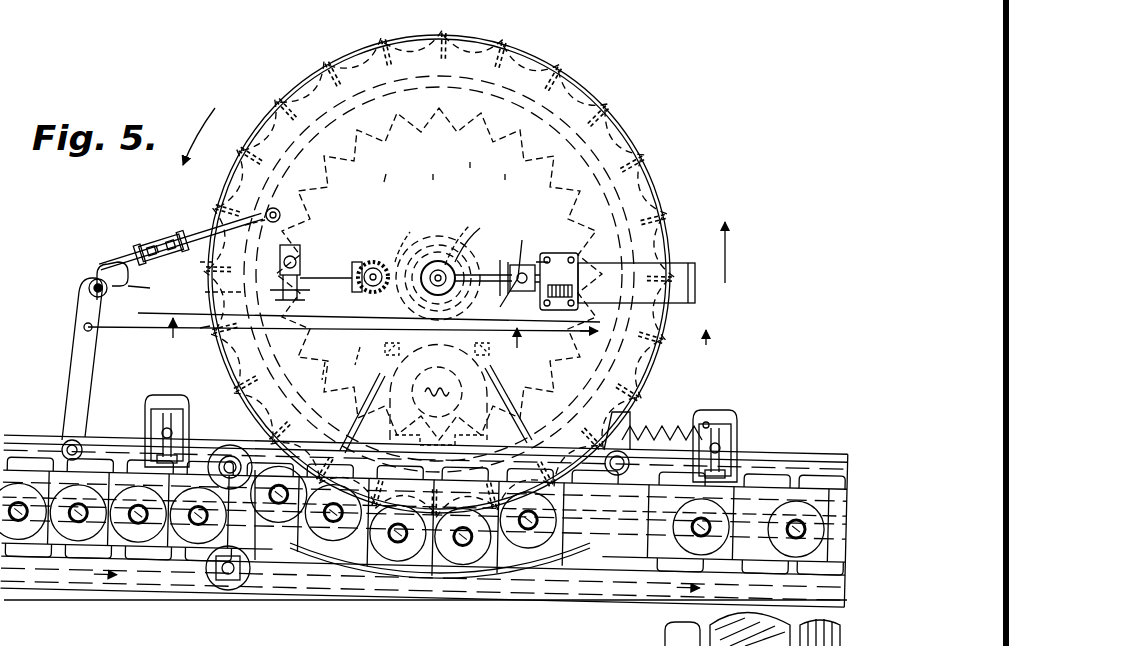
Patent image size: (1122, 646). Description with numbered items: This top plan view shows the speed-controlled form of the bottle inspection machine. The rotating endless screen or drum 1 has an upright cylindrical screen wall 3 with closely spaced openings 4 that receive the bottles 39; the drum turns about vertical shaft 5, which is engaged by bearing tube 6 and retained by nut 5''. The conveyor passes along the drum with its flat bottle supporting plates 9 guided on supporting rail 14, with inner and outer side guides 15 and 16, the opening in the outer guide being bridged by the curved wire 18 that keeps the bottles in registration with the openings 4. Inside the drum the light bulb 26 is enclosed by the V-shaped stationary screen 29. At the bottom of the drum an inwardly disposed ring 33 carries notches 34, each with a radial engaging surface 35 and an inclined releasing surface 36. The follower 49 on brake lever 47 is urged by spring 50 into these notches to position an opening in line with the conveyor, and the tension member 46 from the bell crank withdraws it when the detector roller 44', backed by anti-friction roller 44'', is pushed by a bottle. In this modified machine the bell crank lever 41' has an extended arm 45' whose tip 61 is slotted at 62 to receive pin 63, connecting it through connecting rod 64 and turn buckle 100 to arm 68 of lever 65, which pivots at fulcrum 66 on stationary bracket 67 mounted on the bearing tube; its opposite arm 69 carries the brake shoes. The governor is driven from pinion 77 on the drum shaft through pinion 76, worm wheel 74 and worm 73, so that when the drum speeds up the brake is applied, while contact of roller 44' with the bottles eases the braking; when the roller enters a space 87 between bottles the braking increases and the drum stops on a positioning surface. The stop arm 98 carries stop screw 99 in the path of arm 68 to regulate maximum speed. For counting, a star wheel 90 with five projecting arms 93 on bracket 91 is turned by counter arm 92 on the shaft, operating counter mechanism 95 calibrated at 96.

The drum 1 is at (567, 72).
The screen wall 3 is at (668, 182).
The openings 4 is at (626, 113).
The shaft 5 is at (438, 258).
The nut 5'' is at (631, 410).
The bearing tube 6 is at (343, 342).
The bottle supporting plates 9 is at (85, 560).
The supporting rail 14 is at (566, 601).
The inner side guide 15 is at (765, 470).
The outer side guide 16 is at (192, 560).
The wire 18 is at (466, 580).
The light bulb 26 is at (458, 360).
The stationary screen 29 is at (372, 383).
The ring 33 is at (439, 274).
The notches 34 is at (396, 168).
The engaging surface 35 is at (474, 155).
The releasing surface 36 is at (470, 167).
The bottles 39 is at (35, 490).
The bell crank lever 41' is at (147, 431).
The detector roller 44' is at (224, 447).
The anti-friction roller 44'' is at (247, 588).
The bell crank arm 45' is at (108, 359).
The tension member 46 is at (208, 335).
The brake lever 47 is at (640, 372).
The follower 49 is at (665, 216).
The spring 50 is at (705, 412).
The tip 61 is at (146, 291).
The slot 62 is at (120, 264).
The pin 63 is at (90, 288).
The connecting rod 64 is at (148, 248).
The lever 65 is at (278, 208).
The fulcrum 66 is at (300, 248).
The stationary bracket 67 is at (380, 260).
The arm 68 is at (272, 205).
The arm 69 is at (302, 262).
The worm 73 is at (363, 347).
The worm wheel 74 is at (324, 357).
The pinion 76 is at (405, 232).
The pinion 77 is at (478, 225).
The space 87 is at (241, 515).
The star wheel 90 is at (522, 252).
The bracket 91 is at (650, 265).
The counter arm 92 is at (490, 258).
The projecting arms 93 is at (535, 260).
The counter mechanism 95 is at (560, 252).
The calibration 96 is at (548, 325).
The stop arm 98 is at (205, 292).
The stop screw 99 is at (200, 262).
The turn buckle 100 is at (190, 215).